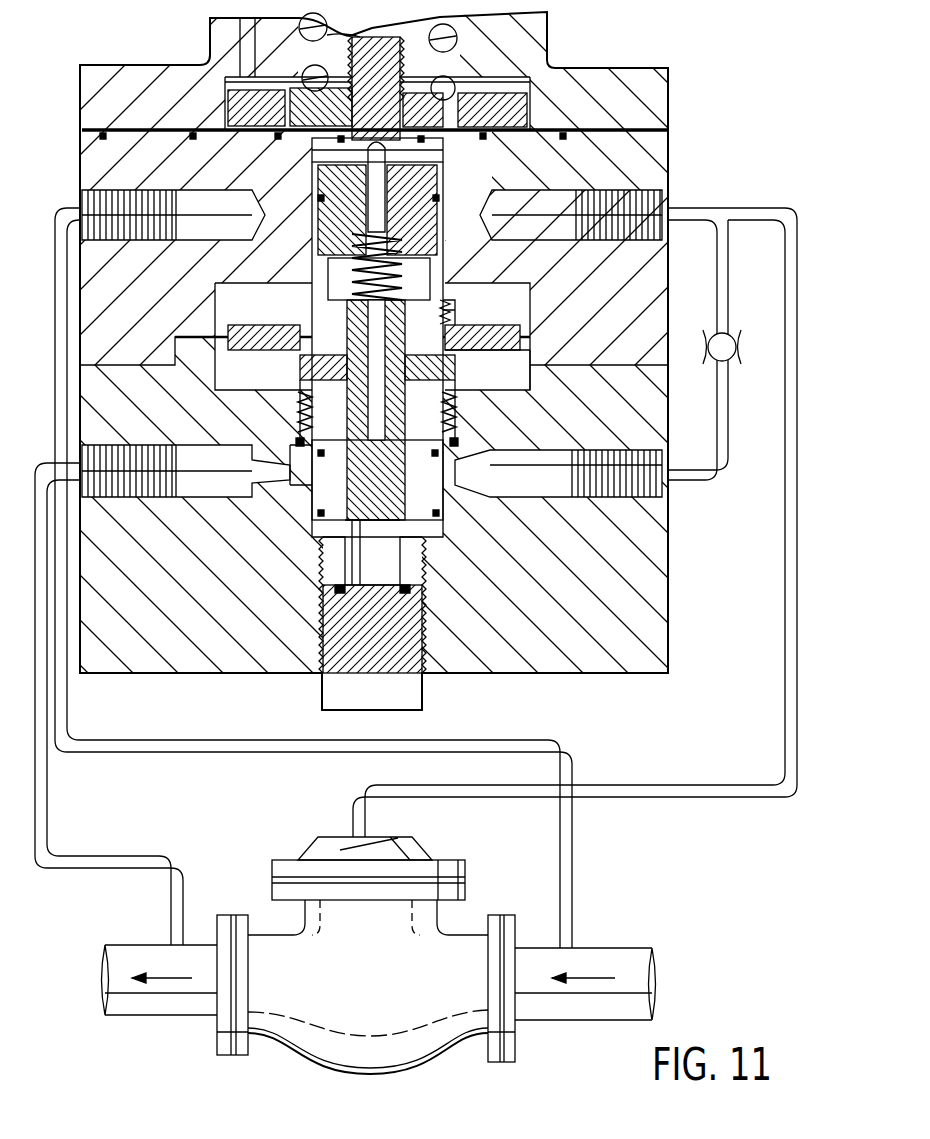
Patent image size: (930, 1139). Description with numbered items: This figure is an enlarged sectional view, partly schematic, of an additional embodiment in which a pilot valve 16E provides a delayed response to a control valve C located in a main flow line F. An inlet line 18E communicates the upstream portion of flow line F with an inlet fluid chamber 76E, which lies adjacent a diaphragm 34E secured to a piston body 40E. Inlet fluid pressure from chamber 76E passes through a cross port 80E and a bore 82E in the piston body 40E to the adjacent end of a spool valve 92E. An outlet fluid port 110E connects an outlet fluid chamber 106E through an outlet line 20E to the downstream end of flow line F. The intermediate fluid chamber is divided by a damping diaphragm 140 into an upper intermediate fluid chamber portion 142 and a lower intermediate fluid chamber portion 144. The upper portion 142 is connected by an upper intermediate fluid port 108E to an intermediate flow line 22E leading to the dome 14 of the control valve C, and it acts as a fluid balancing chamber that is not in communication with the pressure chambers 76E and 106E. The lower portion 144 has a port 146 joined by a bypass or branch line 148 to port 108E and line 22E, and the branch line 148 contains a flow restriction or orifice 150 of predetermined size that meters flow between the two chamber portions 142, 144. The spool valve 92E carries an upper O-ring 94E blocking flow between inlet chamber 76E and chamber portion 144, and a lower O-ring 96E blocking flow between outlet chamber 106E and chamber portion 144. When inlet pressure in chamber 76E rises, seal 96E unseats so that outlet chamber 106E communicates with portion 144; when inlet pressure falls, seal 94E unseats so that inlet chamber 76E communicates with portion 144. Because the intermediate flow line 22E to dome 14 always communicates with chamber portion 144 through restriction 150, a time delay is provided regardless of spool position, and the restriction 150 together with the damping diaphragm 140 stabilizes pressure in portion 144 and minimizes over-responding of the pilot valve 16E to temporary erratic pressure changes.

The pilot valve 16E is at (578, 66).
The diaphragm 34E is at (535, 130).
The cross port 80E is at (430, 155).
The bore 82E is at (380, 180).
The piston body 40E is at (432, 240).
The inlet fluid chamber 76E is at (262, 152).
The upper intermediate fluid port 108E is at (668, 195).
The intermediate flow line 22E is at (793, 228).
The bypass or branch line 148 is at (722, 455).
The flow restriction or orifice 150 is at (722, 340).
The damping diaphragm 140 is at (232, 325).
The upper intermediate fluid chamber portion 142 is at (600, 298).
The lower intermediate fluid chamber portion 144 is at (560, 376).
The upper O-ring 94E is at (440, 308).
The spool valve 92E is at (352, 372).
The lower O-ring 96E is at (312, 442).
The outlet fluid chamber 106E is at (336, 476).
The outlet fluid port 110E is at (282, 458).
The port 146 is at (540, 500).
The outlet line 20E is at (47, 800).
The inlet line 18E is at (573, 836).
The dome 14 is at (372, 848).
The main flow line F is at (582, 950).
The control valve C is at (422, 1040).